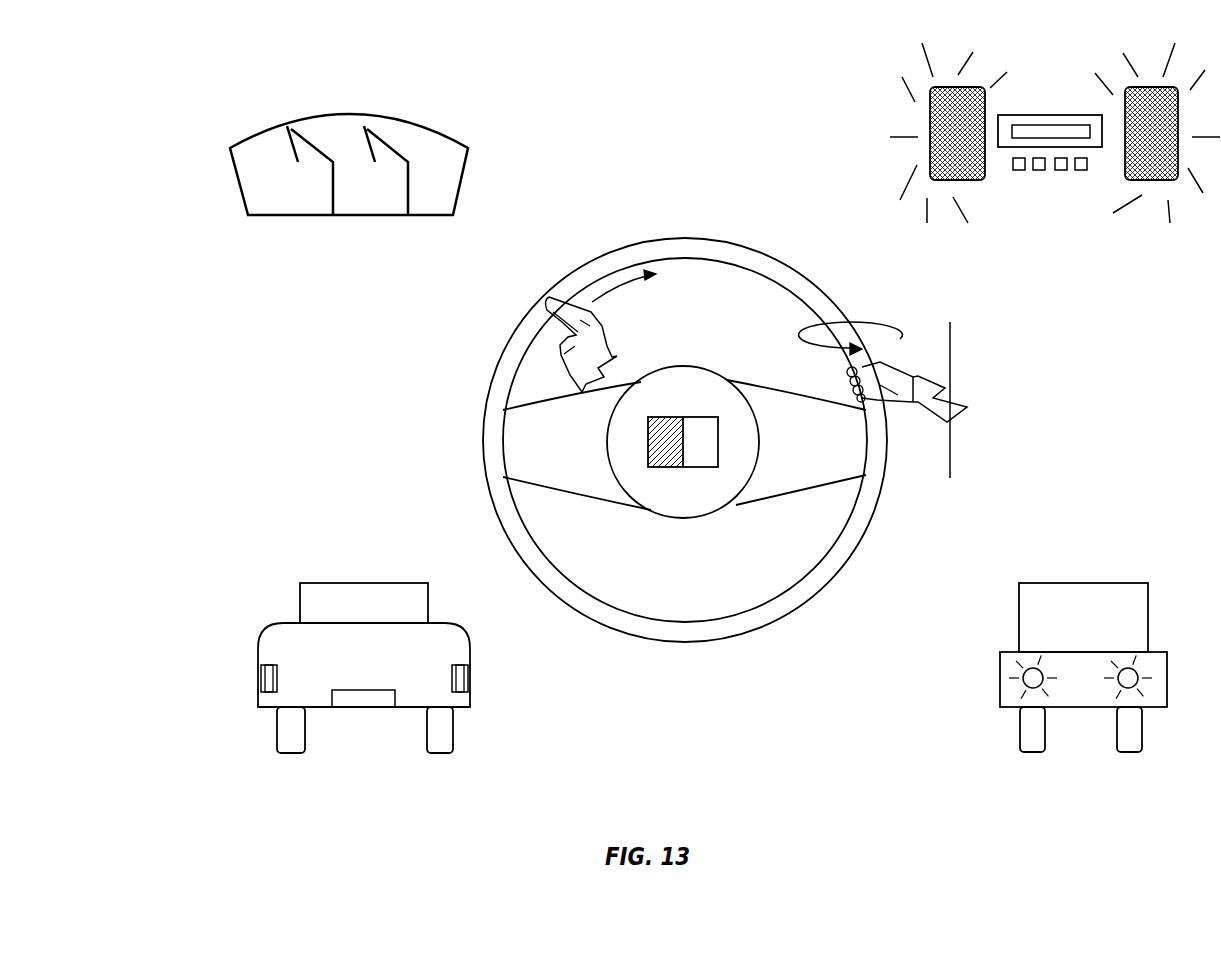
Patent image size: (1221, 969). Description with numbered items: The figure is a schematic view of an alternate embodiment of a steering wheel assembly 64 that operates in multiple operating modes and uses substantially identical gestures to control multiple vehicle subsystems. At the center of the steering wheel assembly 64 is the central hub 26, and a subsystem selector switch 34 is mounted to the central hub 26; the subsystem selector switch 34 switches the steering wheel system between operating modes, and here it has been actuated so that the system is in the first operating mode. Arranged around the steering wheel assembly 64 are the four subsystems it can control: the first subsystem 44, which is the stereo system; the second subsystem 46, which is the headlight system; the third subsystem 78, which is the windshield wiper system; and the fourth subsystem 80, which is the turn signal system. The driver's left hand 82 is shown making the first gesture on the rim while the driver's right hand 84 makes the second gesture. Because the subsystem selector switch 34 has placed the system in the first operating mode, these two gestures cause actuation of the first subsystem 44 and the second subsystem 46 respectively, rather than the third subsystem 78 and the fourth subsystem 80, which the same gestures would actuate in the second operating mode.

The central hub 26 is at (686, 520).
The subsystem selector switch 34 is at (701, 417).
The steering wheel assembly 64 is at (727, 238).
The third subsystem 78 is at (238, 181).
The fourth subsystem 80 is at (258, 678).
The driver's left hand 82 is at (533, 312).
The driver's right hand 84 is at (945, 388).
The first subsystem 44 is at (1059, 172).
The second subsystem 46 is at (1085, 583).